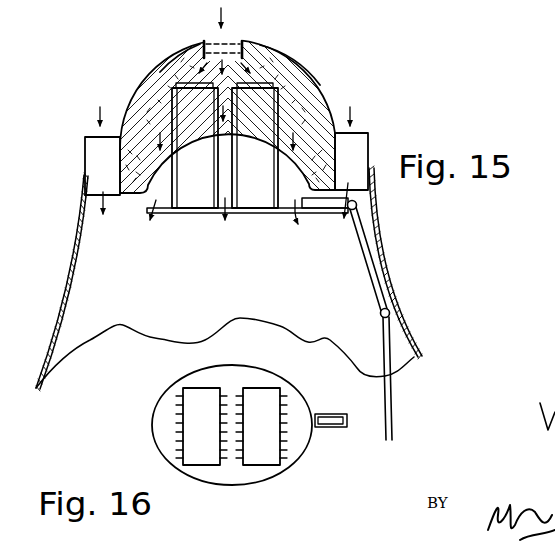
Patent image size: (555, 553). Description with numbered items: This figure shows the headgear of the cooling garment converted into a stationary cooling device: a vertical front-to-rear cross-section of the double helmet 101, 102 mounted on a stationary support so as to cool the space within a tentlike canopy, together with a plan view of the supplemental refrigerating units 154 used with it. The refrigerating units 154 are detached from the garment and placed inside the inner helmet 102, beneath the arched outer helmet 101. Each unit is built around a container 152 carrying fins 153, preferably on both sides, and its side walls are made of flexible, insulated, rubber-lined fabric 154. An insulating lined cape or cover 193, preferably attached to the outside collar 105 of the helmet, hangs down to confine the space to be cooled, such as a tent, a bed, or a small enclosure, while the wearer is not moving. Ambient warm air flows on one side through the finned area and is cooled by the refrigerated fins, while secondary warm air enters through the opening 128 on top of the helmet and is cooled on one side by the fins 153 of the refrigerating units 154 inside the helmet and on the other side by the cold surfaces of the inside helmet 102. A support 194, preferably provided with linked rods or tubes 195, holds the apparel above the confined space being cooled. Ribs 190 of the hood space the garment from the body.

In FIG. 15, the outer helmet 101 is at (284, 72).
In FIG. 15, the inner helmet 102 is at (320, 85).
In FIG. 15, the outside collar 105 is at (370, 146).
In FIG. 15, the opening 128 is at (232, 42).
In FIG. 15, the container 152 is at (186, 50).
In FIG. 15, the fins 153 is at (170, 118).
In FIG. 16, the fins 153 is at (180, 399).
In FIG. 15, the refrigerating units 154 is at (182, 150).
In FIG. 16, the refrigerating units 154 is at (200, 388).
In FIG. 15, the ribs 190 is at (353, 0).
In FIG. 15, the insulating lined cape or cover 193 is at (78, 230).
In FIG. 15, the support 194 is at (285, 213).
In FIG. 16, the support 194 is at (304, 455).
In FIG. 15, the linked rods or tubes 195 is at (368, 263).